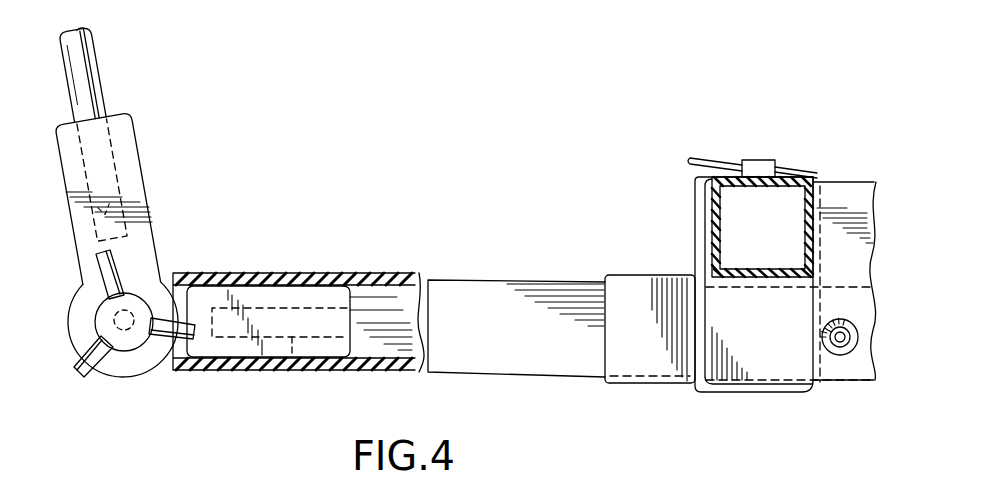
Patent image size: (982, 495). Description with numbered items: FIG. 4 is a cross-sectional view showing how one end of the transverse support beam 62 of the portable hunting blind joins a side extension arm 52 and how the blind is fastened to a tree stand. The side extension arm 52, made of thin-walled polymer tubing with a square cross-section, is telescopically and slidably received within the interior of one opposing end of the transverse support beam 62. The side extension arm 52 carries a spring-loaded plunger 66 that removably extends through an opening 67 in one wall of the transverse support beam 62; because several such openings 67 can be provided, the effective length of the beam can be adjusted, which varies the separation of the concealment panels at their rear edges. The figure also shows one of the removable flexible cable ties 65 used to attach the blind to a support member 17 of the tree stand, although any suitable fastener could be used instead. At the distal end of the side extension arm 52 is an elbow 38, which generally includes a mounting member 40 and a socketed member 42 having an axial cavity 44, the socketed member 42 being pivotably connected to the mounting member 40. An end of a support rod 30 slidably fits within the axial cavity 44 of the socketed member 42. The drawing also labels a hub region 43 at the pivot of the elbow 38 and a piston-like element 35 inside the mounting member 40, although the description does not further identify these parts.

The support rod 30 is at (96, 58).
The axial cavity 44 is at (115, 167).
The socketed member 42 is at (140, 234).
The elbow 38 is at (80, 387).
The hub 43 is at (133, 330).
The mounting member 40 is at (285, 295).
The piston 35 is at (278, 378).
The side extension arm 52 is at (460, 300).
The transverse support beam 62 is at (627, 298).
The support member 17 is at (722, 224).
The flexible cable tie 65 is at (757, 160).
The spring-loaded plunger 66 is at (822, 340).
The opening 67 is at (846, 361).